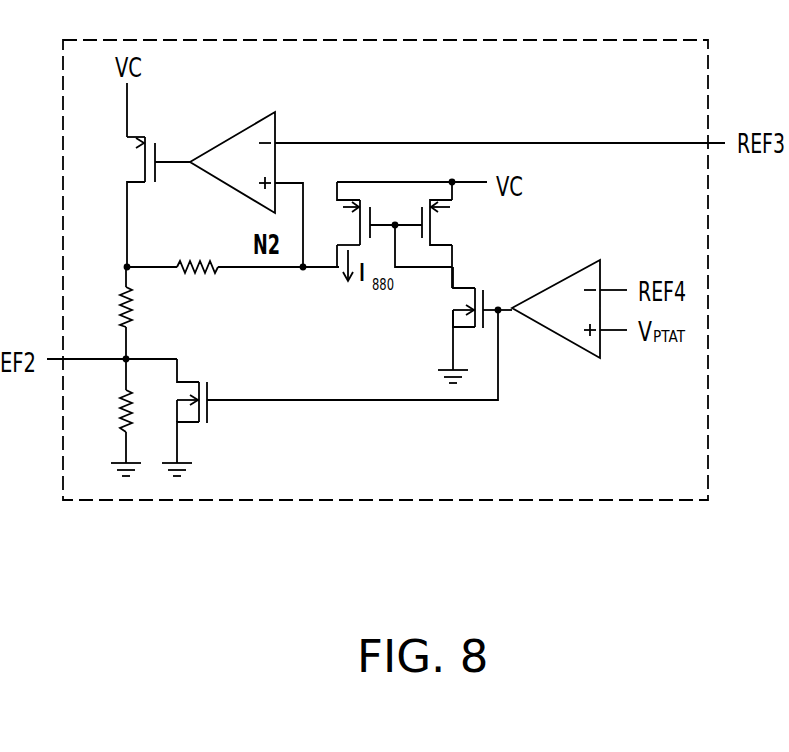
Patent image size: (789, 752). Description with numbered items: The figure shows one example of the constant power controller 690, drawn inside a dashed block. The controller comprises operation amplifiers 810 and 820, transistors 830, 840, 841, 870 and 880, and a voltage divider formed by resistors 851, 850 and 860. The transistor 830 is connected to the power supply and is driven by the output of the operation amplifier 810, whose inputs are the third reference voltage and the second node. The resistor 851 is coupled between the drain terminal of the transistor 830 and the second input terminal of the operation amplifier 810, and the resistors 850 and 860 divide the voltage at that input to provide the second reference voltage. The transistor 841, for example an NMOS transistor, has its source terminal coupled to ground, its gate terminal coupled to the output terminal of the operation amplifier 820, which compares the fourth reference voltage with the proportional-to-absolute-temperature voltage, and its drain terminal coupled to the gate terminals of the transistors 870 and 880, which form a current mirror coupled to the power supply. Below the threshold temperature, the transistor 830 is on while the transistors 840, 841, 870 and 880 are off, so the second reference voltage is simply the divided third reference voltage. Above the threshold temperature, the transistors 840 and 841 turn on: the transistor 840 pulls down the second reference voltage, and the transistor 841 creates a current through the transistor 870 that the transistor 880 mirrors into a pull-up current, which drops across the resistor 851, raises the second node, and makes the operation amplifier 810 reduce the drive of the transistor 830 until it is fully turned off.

The constant power controller 690 is at (415, 500).
The operation amplifier 810 is at (223, 140).
The operation amplifier 820 is at (547, 283).
The transistor 830 is at (136, 175).
The transistor 840 is at (204, 417).
The transistor 841 is at (439, 301).
The resistor 850 is at (104, 307).
The resistor 851 is at (197, 289).
The resistor 860 is at (104, 411).
The transistor 870 is at (454, 222).
The transistor 880 is at (342, 213).